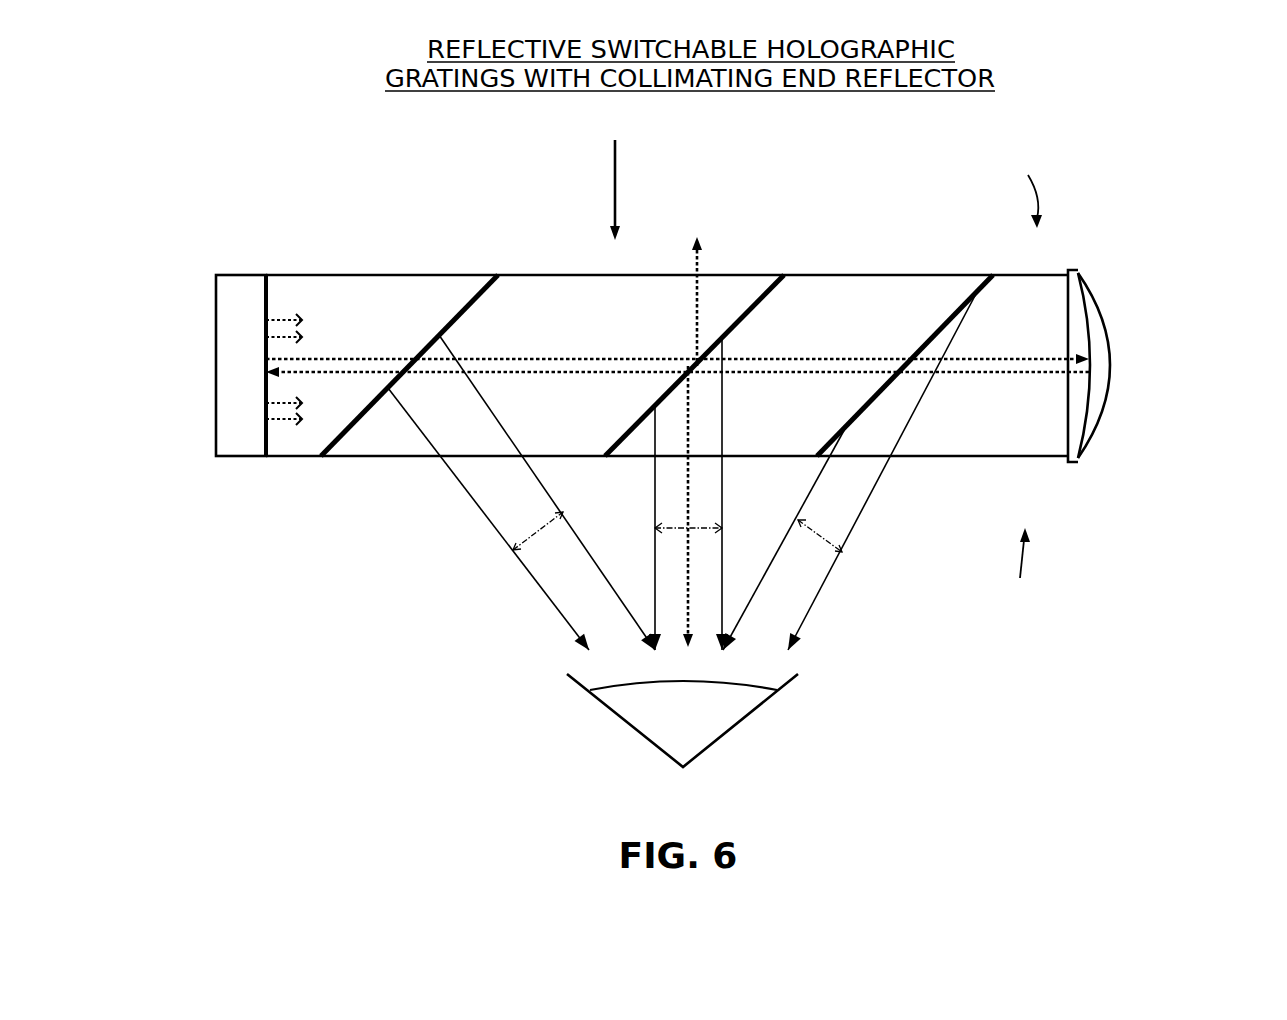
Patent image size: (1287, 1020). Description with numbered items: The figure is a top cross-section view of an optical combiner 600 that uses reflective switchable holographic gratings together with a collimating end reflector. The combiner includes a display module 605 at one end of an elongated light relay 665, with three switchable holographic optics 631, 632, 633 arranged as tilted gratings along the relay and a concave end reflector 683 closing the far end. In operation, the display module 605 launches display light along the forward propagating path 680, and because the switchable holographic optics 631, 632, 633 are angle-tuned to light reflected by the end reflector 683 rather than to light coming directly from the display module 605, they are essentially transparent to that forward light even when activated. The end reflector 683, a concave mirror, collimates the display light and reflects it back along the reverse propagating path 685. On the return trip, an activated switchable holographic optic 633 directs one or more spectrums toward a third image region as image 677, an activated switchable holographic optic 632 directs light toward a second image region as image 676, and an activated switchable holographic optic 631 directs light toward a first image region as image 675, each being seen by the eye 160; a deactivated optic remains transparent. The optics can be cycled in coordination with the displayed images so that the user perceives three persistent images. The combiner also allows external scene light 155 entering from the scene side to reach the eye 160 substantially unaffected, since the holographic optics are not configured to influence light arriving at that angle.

The optical combiner 600 is at (1166, 95).
The display module 605 is at (233, 273).
The light relay 665 is at (290, 457).
The switchable holographic optic 631 is at (472, 280).
The switchable holographic optic 632 is at (748, 277).
The switchable holographic optic 633 is at (955, 277).
The external scene light 155 is at (613, 175).
The forward propagating path 680 is at (828, 357).
The reverse propagating path 685 is at (1040, 375).
The end reflector 683 is at (1090, 417).
The image 675 is at (517, 543).
The image 676 is at (700, 528).
The image 677 is at (816, 535).
The eye 160 is at (682, 720).